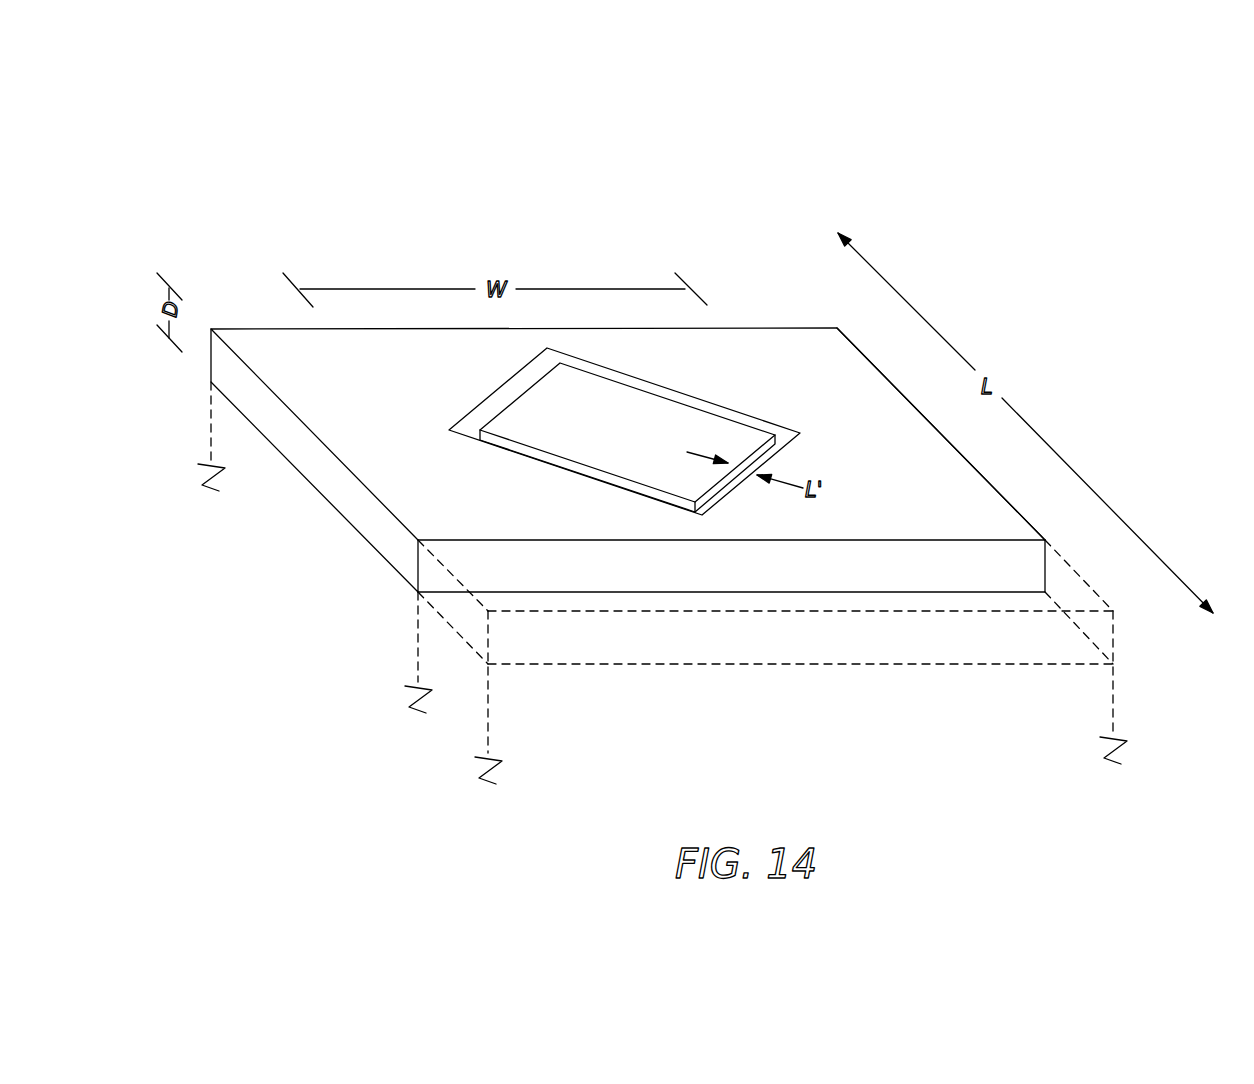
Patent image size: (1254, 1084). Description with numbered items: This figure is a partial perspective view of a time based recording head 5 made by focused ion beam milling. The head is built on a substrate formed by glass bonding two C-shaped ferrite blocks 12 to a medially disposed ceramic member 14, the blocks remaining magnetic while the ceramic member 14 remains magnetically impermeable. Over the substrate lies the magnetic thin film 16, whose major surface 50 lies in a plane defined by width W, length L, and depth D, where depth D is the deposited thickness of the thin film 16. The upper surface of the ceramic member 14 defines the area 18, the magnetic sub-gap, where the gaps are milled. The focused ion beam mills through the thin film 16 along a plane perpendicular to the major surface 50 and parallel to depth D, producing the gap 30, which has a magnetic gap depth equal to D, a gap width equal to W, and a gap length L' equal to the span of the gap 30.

The time based recording head 5 is at (670, 444).
The C-shaped ferrite block 12 is at (1090, 710).
The ceramic member 14 is at (243, 453).
The magnetic thin film 16 is at (947, 495).
The area 18 is at (838, 377).
The gap 30 is at (537, 368).
The major surface 50 is at (405, 487).